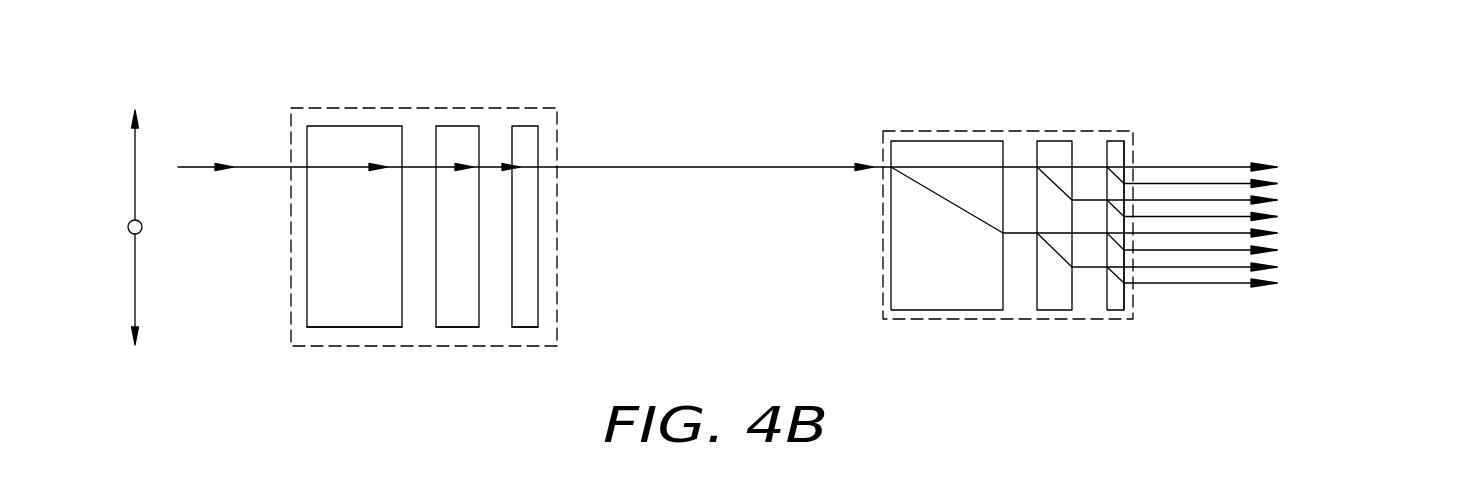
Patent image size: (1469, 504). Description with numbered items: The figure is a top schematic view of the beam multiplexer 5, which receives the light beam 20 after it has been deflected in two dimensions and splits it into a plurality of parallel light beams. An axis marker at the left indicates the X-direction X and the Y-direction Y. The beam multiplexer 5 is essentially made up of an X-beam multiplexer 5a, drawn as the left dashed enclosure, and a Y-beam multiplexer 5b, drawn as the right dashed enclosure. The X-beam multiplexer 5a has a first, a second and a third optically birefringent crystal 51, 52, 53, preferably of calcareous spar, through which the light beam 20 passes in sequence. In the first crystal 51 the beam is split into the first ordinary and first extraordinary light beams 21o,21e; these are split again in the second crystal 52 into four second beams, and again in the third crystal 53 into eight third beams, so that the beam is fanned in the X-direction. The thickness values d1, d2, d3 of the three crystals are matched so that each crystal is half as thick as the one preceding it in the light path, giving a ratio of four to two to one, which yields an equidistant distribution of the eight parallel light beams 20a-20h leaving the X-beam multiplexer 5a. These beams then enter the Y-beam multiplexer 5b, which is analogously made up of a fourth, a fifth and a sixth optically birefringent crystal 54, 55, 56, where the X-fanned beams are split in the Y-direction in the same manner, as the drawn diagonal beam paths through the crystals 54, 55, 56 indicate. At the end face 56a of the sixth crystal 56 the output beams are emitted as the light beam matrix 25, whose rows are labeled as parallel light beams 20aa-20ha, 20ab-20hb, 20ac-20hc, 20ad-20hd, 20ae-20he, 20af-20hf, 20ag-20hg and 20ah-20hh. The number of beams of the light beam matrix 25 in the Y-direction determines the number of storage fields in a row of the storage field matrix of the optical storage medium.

The beam multiplexer 5 is at (288, 70).
The X-beam multiplexer 5a is at (509, 92).
The Y-beam multiplexer 5b is at (1015, 118).
The light beam 20 is at (197, 167).
The first ordinary and first extraordinary light beams 21o,21e is at (353, 167).
The parallel light beams 20a-20h is at (793, 167).
The light beam matrix 25 is at (1276, 197).
The first optically birefringent crystal 51 is at (332, 315).
The second optically birefringent crystal 52 is at (448, 315).
The third optically birefringent crystal 53 is at (523, 315).
The thickness of first crystal d1 is at (382, 330).
The thickness of second crystal d2 is at (469, 330).
The thickness of third crystal d3 is at (533, 330).
The fourth optically birefringent crystal 54 is at (953, 305).
The fifth optically birefringent crystal 55 is at (1053, 305).
The sixth optically birefringent crystal 56 is at (1113, 305).
The end face of sixth crystal 56a is at (1126, 300).
The parallel light beams 20aa-20ha is at (1243, 167).
The parallel light beams 20ab-20hb is at (1243, 182).
The parallel light beams 20ac-20hc is at (1240, 199).
The parallel light beams 20ad-20hd is at (1240, 216).
The parallel light beams 20ae-20he is at (1240, 233).
The parallel light beams 20af-20hf is at (1245, 250).
The parallel light beams 20ag-20hg is at (1238, 270).
The parallel light beams 20ah-20hh is at (1233, 287).
The X-direction X is at (142, 226).
The Y-direction Y is at (136, 286).